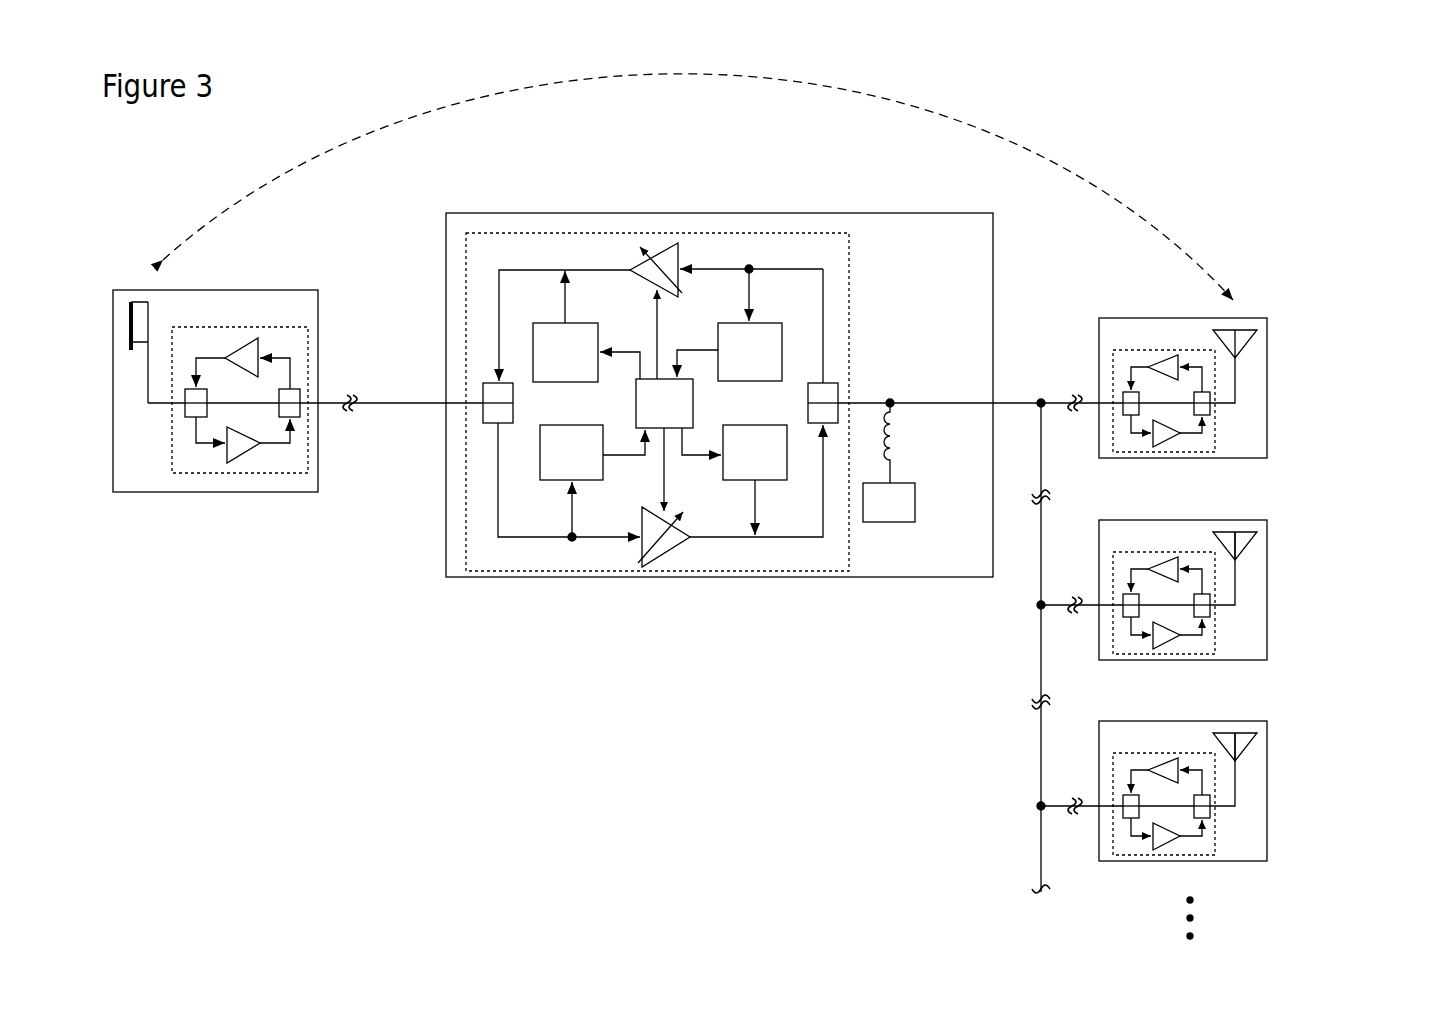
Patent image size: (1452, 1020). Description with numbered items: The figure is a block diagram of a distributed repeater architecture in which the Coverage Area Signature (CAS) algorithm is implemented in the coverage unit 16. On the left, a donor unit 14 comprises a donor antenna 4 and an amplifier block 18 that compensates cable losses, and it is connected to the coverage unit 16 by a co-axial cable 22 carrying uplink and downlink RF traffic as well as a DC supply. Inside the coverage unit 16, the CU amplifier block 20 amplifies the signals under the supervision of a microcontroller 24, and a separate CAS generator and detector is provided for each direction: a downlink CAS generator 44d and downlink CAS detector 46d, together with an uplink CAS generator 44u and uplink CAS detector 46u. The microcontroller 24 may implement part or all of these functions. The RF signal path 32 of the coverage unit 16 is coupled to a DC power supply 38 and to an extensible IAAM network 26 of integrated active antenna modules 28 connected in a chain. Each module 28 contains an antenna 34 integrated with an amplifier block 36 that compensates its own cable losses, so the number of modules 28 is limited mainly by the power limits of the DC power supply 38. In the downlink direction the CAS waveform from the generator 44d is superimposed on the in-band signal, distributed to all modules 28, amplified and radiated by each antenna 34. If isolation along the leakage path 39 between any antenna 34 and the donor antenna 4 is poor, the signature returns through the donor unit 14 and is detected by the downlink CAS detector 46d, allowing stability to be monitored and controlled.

The donor antenna 4 is at (148, 322).
The donor unit 14 is at (215, 370).
The coverage unit 16 is at (903, 213).
The amplifier block 18 is at (237, 327).
The CU amplifier block 20 is at (849, 316).
The co-axial cable 22 is at (329, 403).
The microcontroller 24 is at (693, 410).
The IAAM network 26 is at (1360, 308).
The integrated active antenna module 28 is at (1188, 574).
The RF signal path 32 is at (920, 403).
The IAAM antenna 34 is at (1255, 330).
The amplifier block 36 is at (1150, 350).
The DC power supply 38 is at (915, 503).
The leakage path 39 is at (1105, 193).
The uplink CAS generator 44u is at (587, 323).
The downlink CAS generator 44d is at (768, 482).
The uplink CAS detector 46u is at (760, 323).
The downlink CAS detector 46d is at (585, 482).